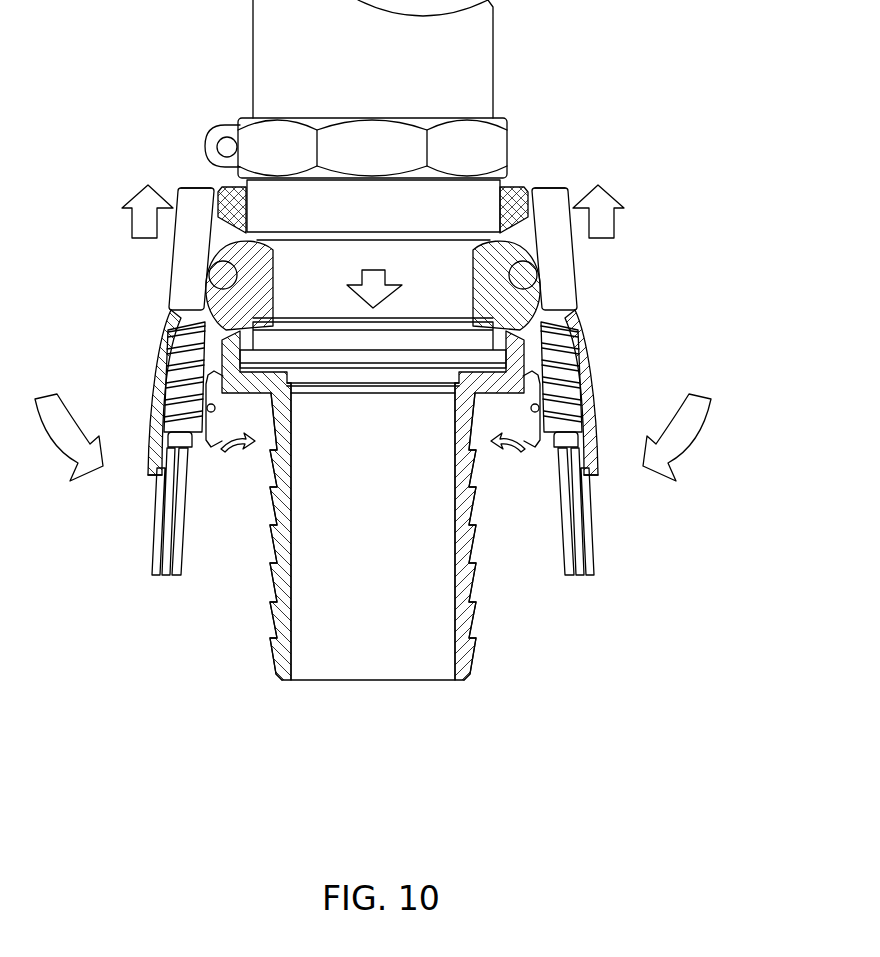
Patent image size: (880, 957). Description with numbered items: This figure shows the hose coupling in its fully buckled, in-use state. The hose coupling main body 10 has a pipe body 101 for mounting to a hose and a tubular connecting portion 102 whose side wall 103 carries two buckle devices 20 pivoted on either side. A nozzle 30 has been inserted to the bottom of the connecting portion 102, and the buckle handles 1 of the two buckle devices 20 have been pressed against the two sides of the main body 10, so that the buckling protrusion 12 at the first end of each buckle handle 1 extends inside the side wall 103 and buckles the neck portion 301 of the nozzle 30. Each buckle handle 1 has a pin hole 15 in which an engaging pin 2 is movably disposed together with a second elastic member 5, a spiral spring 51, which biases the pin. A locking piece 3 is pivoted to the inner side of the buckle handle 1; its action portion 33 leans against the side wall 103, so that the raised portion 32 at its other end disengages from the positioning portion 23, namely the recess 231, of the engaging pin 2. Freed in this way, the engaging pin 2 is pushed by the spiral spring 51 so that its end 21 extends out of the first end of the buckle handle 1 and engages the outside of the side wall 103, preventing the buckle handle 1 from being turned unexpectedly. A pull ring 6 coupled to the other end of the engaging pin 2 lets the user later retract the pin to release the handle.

The buckle handle 1 is at (598, 470).
The engaging pin 2 is at (579, 272).
The locking piece 3 is at (531, 418).
The second elastic member 5 is at (434, 370).
The spiral spring 51 is at (589, 362).
The pull ring 6 is at (591, 542).
The hose coupling main body 10 is at (353, 680).
The buckling protrusion 12 is at (506, 262).
The pin hole 15 is at (587, 330).
The buckle device 20 is at (156, 345).
The end of engaging pin 21 is at (553, 188).
The positioning portion 23 is at (446, 377).
The recess 231 is at (581, 381).
The nozzle 30 is at (442, 120).
The raised portion 32 is at (546, 438).
The action portion 33 is at (527, 383).
The pipe body 101 is at (283, 602).
The connecting portion 102 is at (228, 180).
The side wall 103 is at (512, 228).
The neck portion 301 is at (317, 262).